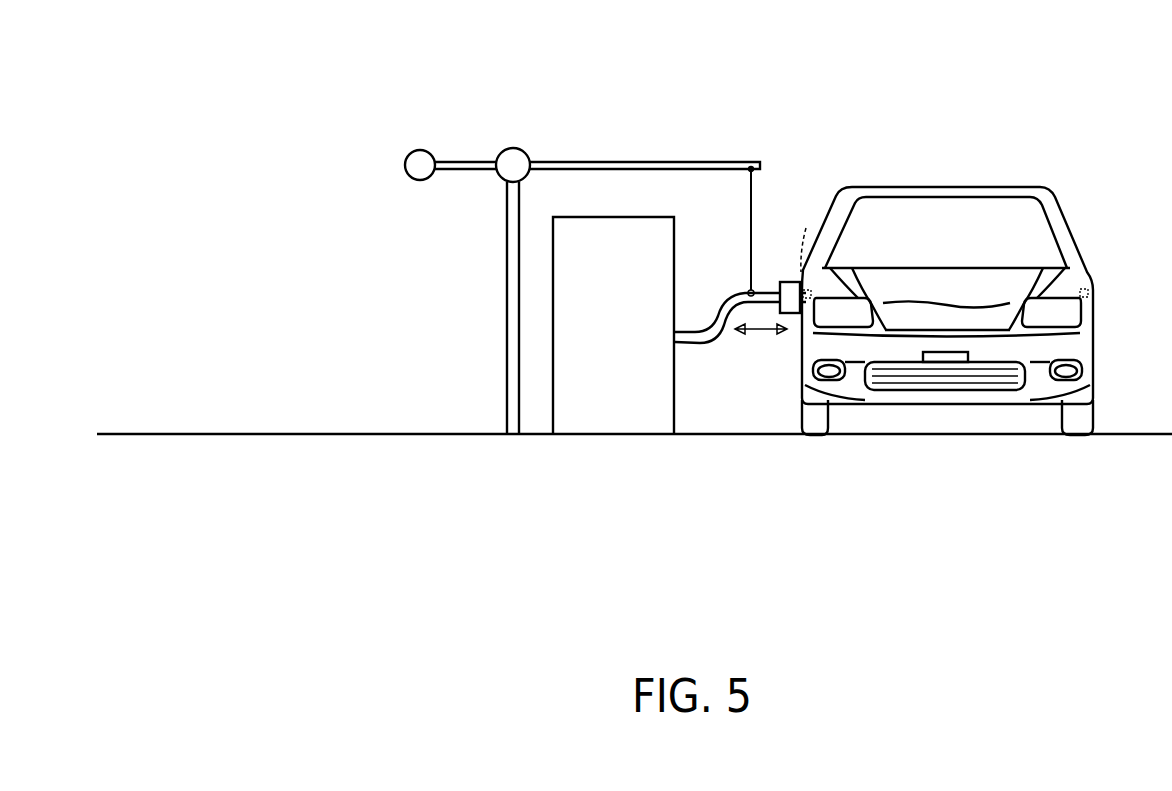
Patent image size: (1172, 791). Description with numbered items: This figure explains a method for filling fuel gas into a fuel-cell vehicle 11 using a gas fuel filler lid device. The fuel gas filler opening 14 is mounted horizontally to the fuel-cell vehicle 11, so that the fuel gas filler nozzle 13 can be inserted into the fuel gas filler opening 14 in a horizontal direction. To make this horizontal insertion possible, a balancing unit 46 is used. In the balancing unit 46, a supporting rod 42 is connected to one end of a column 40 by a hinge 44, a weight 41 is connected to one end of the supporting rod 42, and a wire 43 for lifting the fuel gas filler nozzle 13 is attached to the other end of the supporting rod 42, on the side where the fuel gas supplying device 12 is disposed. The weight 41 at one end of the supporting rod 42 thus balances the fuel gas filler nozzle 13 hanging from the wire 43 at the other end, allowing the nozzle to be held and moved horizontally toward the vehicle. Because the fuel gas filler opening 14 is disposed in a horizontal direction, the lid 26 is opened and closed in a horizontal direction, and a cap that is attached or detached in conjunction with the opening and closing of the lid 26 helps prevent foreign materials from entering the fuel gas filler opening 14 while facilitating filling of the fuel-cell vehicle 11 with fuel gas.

The fuel-cell vehicle 11 is at (1048, 164).
The fuel gas supplying device 12 is at (597, 418).
The fuel gas filler nozzle 13 is at (702, 343).
The fuel gas filler opening 14 is at (805, 288).
The lid 26 is at (780, 282).
The column 40 is at (515, 285).
The weight 41 is at (409, 151).
The supporting rod 42 is at (595, 160).
The wire 43 is at (753, 195).
The hinge 44 is at (512, 148).
The balancing unit 46 is at (442, 220).